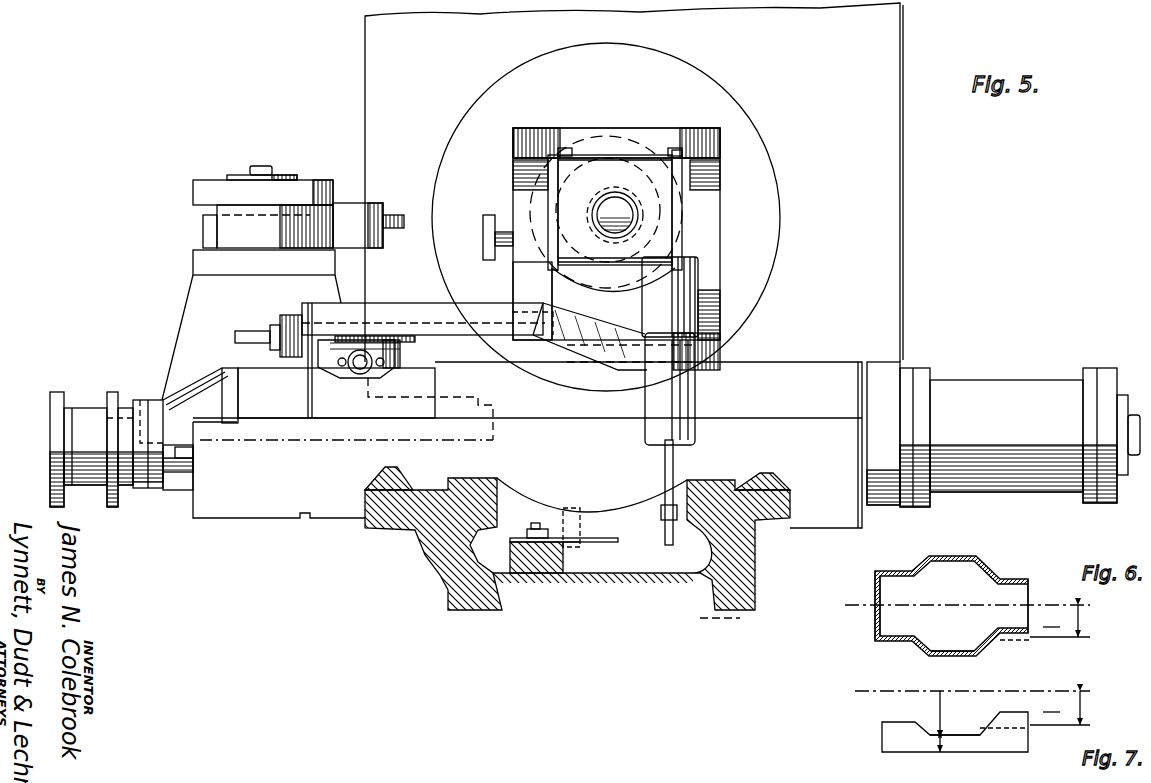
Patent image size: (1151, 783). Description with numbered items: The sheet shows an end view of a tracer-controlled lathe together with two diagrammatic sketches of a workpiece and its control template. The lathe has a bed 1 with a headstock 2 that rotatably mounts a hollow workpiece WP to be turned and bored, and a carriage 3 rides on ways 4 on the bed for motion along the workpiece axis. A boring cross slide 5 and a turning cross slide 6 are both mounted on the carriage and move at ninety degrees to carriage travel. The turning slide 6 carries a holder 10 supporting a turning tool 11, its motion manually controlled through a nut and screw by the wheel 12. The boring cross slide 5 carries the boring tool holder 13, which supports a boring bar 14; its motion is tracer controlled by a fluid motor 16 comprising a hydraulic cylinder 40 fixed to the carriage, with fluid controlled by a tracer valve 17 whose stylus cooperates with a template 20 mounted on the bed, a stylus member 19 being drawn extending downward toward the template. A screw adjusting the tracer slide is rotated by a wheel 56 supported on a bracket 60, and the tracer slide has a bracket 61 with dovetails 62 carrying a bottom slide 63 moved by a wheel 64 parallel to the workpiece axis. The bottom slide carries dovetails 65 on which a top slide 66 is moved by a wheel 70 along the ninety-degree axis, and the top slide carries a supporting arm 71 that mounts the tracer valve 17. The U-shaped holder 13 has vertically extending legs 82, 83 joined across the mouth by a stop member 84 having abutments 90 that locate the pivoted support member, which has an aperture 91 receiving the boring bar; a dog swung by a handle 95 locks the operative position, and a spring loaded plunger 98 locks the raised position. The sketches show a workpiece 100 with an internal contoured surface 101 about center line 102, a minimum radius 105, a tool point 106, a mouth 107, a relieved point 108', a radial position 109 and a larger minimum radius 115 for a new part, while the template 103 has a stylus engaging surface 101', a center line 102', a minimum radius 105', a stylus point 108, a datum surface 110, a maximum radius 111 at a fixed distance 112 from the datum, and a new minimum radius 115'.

In FIG. 5, the bed 1 is at (745, 600).
In FIG. 5, the headstock 2 is at (898, 149).
In FIG. 5, the carriage 3 is at (340, 519).
In FIG. 5, the ways 4 is at (382, 478).
In FIG. 5, the boring cross slide 5 is at (784, 362).
In FIG. 5, the turning cross slide 6 is at (152, 400).
In FIG. 5, the holder 10 is at (192, 188).
In FIG. 5, the turning tool 11 is at (396, 216).
In FIG. 5, the wheel 12 is at (57, 392).
In FIG. 5, the boring tool holder 13 is at (662, 230).
In FIG. 5, the boring bar 14 is at (606, 210).
In FIG. 5, the fluid motor 16 is at (1006, 380).
In FIG. 5, the tracer valve 17 is at (700, 295).
In FIG. 5, the spindle rod 19 is at (665, 538).
In FIG. 5, the template 20 is at (594, 538).
In FIG. 5, the hydraulic cylinder 40 is at (946, 380).
In FIG. 5, the wheel 56 is at (112, 392).
In FIG. 5, the bracket 60 is at (198, 384).
In FIG. 5, the bracket 61 is at (306, 385).
In FIG. 5, the dovetails 62 is at (408, 360).
In FIG. 5, the bottom slide 63 is at (412, 350).
In FIG. 5, the wheel 64 is at (357, 375).
In FIG. 5, the dovetails 65 is at (372, 336).
In FIG. 5, the top slide 66 is at (418, 303).
In FIG. 5, the wheel 70 is at (283, 325).
In FIG. 5, the supporting arm 71 is at (568, 330).
In FIG. 5, the leg 82 is at (522, 264).
In FIG. 5, the leg 83 is at (722, 252).
In FIG. 5, the stop member 84 is at (722, 140).
In FIG. 5, the abutments 90 is at (566, 148).
In FIG. 5, the aperture 91 is at (640, 215).
In FIG. 5, the handle 95 is at (664, 200).
In FIG. 5, the spring loaded plunger 98 is at (497, 224).
In FIG. 5, the workpiece WP is at (612, 137).
In FIG. 6, the workpiece 100 is at (950, 546).
In FIG. 6, the internal contoured surface 101 is at (957, 631).
In FIG. 6, the center line 102 is at (956, 594).
In FIG. 6, the minimum radius 105 is at (1055, 603).
In FIG. 6, the point 106 is at (878, 632).
In FIG. 6, the mouth 107 is at (1030, 592).
In FIG. 6, the point 108' is at (1035, 644).
In FIG. 6, the position 109 is at (880, 624).
In FIG. 6, the minimum radius 115 is at (1069, 621).
In FIG. 7, the stylus engaging surface 101' is at (961, 715).
In FIG. 7, the template center line 102' is at (964, 680).
In FIG. 7, the template 103 is at (898, 745).
In FIG. 7, the minimum radius 105' is at (1061, 689).
In FIG. 7, the point 108 is at (1006, 698).
In FIG. 7, the datum surface 110 is at (944, 752).
In FIG. 7, the maximum radius 111 is at (940, 705).
In FIG. 7, the fixed distance 112 is at (940, 746).
In FIG. 7, the minimum radius 115' is at (1071, 708).